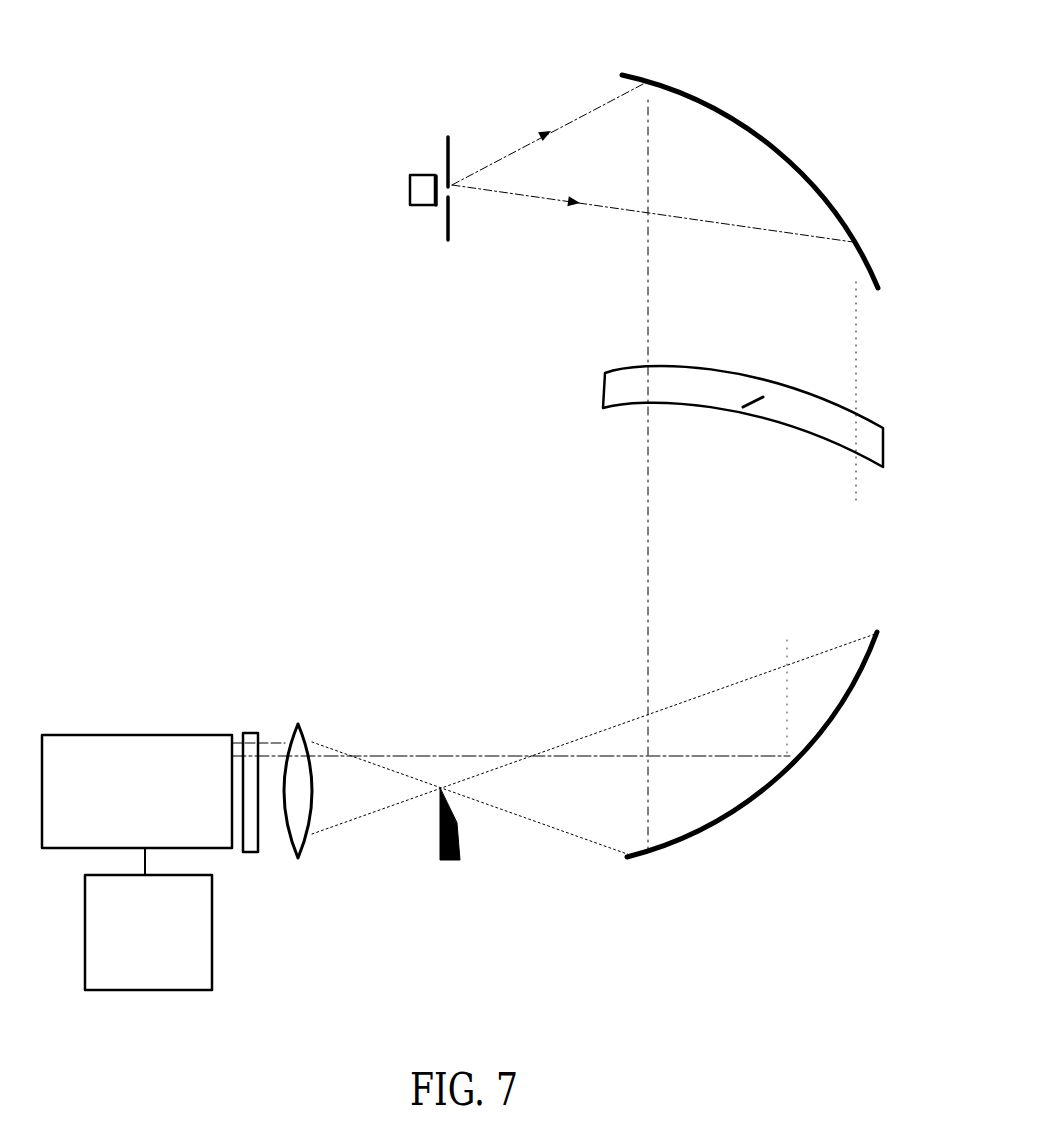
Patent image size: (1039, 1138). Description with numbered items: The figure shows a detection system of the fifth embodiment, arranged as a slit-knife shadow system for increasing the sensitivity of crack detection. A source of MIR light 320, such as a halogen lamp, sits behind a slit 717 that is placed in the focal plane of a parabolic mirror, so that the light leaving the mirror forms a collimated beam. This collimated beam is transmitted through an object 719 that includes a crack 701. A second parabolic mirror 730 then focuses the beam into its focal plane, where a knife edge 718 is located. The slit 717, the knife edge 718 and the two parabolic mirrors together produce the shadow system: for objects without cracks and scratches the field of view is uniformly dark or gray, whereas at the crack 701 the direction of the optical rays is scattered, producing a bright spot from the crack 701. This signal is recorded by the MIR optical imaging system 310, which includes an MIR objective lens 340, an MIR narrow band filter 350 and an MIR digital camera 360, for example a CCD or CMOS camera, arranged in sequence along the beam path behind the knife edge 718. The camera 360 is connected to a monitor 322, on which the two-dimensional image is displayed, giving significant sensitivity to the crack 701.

The MIR optical 2-D imaging system 310 is at (53, 630).
The source of MIR light 320 is at (397, 194).
The monitor 322 is at (148, 932).
The MIR objective lens 340 is at (308, 733).
The MIR narrow band filter 350 is at (258, 733).
The MIR digital camera 360 is at (137, 805).
The crack 701 is at (753, 415).
The slit 717 is at (452, 130).
The knife edge 718 is at (437, 853).
The object 719 is at (600, 408).
The second parabolic mirror 730 is at (743, 72).